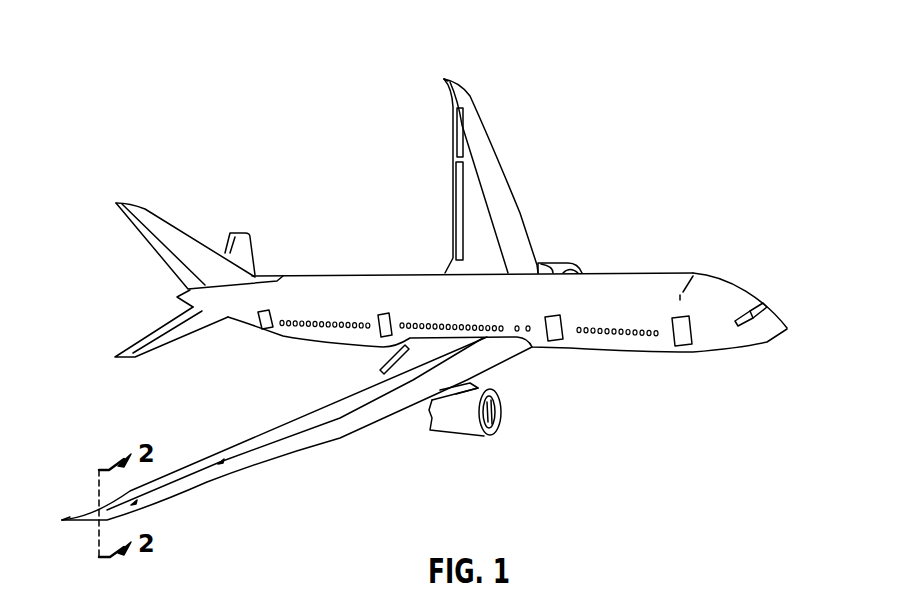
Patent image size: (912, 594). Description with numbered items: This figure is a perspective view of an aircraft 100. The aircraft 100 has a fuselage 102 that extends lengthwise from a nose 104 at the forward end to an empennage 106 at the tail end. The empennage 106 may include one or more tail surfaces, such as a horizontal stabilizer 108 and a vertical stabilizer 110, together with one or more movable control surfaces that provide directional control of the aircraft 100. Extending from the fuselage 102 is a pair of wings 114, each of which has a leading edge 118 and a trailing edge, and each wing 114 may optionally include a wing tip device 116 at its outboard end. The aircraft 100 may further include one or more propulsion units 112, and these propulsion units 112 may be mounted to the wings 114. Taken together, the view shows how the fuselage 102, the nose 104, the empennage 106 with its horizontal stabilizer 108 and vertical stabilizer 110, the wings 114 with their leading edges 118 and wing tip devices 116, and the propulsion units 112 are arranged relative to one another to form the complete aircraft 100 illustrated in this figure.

The aircraft 100 is at (672, 273).
The fuselage 102 is at (618, 280).
The nose 104 is at (789, 328).
The empennage 106 is at (177, 297).
The horizontal stabilizer 108 is at (246, 248).
The vertical stabilizer 110 is at (165, 216).
The propulsion unit 112 is at (498, 428).
The wing 114 is at (370, 426).
The wing tip device 116 is at (83, 522).
The leading edge 118 is at (257, 468).